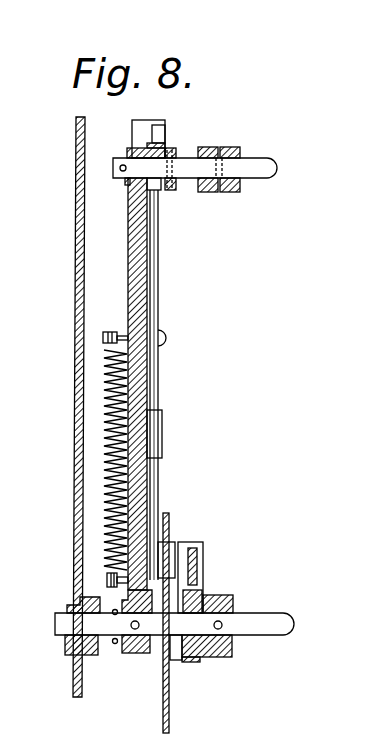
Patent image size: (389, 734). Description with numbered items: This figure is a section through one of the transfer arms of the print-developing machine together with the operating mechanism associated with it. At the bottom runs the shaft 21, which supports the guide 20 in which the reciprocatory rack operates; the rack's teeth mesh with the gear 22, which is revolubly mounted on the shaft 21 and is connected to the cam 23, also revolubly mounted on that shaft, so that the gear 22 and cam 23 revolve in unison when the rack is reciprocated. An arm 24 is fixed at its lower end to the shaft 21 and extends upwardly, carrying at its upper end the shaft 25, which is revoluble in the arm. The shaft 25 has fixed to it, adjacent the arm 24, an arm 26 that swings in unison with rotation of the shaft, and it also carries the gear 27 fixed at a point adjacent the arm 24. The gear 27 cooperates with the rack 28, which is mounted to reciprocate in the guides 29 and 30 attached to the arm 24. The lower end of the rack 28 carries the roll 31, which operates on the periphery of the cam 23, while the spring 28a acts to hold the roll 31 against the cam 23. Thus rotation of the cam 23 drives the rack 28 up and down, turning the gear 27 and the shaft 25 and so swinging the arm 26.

The guide 20 is at (193, 553).
The shaft 21 is at (257, 620).
The gear 22 is at (205, 590).
The cam 23 is at (166, 516).
The arm 24 is at (142, 283).
The shaft 25 is at (260, 163).
The arm 26 is at (212, 147).
The gear 27 is at (173, 147).
The rack 28 is at (157, 383).
The spring 28a is at (110, 397).
The guide 29 is at (167, 423).
The guide 30 is at (138, 129).
The roll 31 is at (166, 557).